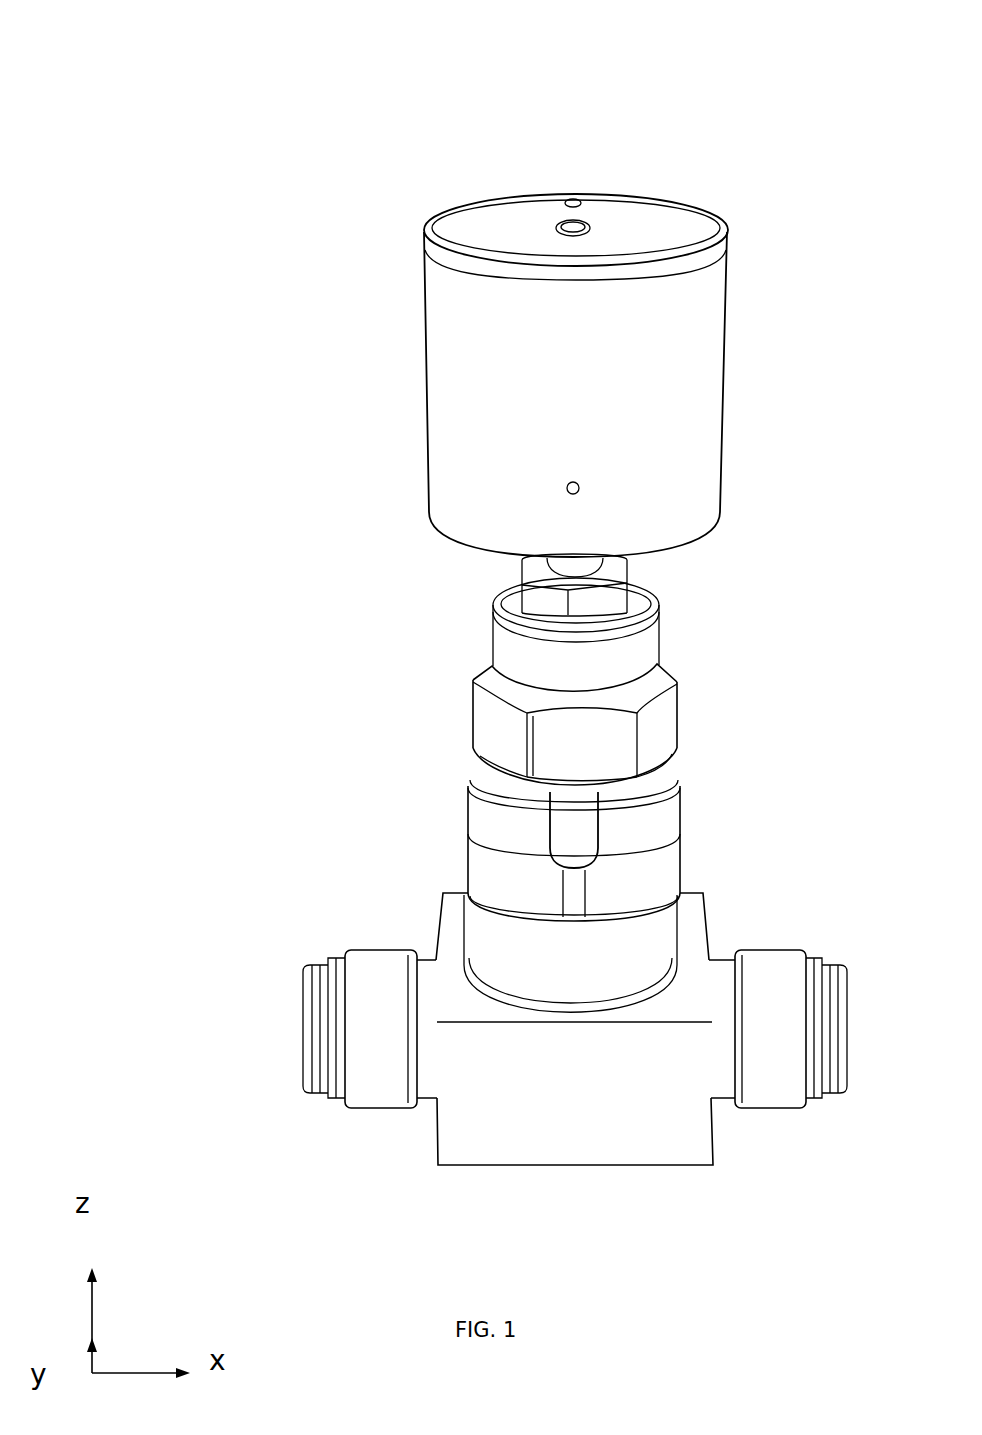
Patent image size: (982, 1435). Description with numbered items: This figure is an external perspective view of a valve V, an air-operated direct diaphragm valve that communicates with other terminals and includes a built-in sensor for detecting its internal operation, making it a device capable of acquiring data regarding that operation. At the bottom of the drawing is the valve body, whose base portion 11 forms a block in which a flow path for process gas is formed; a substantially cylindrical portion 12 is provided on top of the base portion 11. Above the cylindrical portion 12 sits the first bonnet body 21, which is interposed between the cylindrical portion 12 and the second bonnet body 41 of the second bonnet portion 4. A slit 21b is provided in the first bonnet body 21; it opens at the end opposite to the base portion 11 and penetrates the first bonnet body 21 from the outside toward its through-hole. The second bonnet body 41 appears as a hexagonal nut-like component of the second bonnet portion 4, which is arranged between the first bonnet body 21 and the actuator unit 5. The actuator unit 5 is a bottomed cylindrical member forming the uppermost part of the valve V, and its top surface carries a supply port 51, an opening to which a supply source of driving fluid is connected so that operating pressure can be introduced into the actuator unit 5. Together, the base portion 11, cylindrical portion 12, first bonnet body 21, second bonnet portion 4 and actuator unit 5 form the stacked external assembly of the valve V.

The valve V is at (775, 134).
The actuator unit 5 is at (723, 380).
The supply port 51 is at (593, 227).
The second bonnet portion 4 is at (675, 667).
The second bonnet body 41 is at (676, 720).
The first bonnet body 21 is at (678, 828).
The slit 21b is at (560, 866).
The cylindrical portion 12 is at (672, 937).
The base portion 11 is at (753, 957).